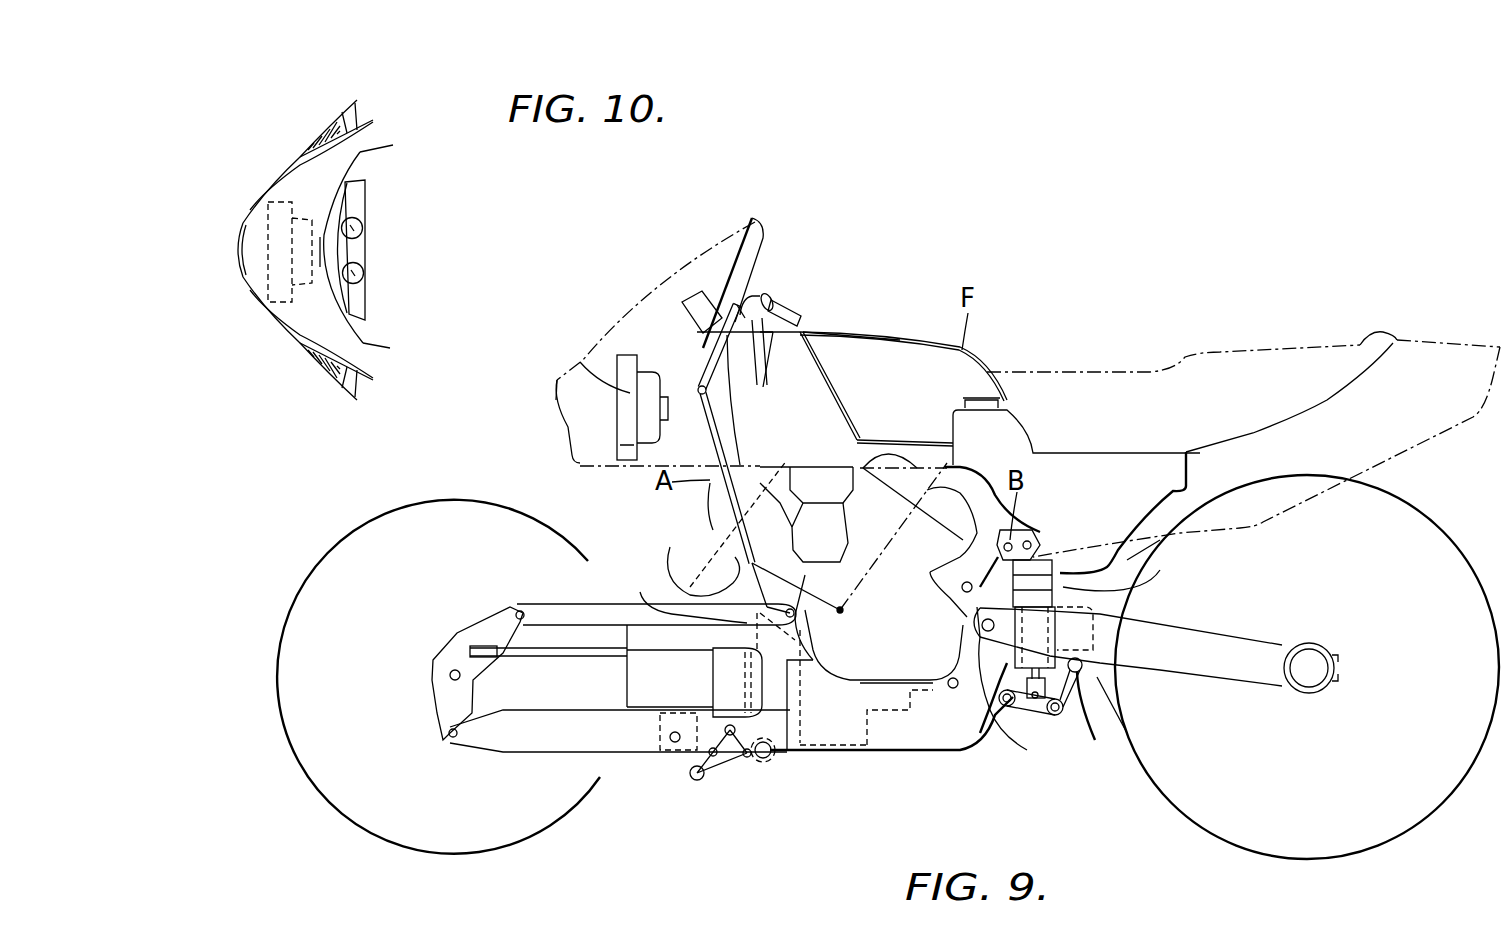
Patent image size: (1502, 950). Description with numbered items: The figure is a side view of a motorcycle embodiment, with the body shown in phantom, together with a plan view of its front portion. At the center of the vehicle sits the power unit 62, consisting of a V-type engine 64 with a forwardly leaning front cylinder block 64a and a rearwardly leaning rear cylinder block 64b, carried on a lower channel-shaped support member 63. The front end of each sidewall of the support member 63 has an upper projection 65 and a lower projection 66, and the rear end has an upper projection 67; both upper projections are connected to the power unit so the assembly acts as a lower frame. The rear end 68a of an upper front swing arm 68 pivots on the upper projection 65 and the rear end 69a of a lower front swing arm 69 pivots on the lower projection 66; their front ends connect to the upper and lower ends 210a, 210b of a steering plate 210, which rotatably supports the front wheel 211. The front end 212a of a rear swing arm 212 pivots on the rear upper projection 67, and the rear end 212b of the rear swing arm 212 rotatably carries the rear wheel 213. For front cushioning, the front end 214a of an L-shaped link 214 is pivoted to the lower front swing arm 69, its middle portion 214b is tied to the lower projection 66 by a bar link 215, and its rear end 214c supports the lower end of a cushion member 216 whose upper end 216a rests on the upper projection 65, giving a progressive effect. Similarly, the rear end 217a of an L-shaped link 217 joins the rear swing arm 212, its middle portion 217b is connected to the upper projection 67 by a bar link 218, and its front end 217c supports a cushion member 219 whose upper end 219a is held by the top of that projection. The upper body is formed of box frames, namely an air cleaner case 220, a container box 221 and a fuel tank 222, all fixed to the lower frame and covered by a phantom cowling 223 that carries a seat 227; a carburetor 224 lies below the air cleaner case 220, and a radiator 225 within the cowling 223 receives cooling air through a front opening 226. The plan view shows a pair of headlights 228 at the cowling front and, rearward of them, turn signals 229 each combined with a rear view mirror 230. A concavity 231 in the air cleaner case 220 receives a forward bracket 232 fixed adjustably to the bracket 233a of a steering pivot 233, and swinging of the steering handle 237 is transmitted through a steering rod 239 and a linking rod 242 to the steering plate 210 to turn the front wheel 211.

In FIG. 9, the power unit 62 is at (903, 657).
In FIG. 9, the support member 63 is at (950, 727).
In FIG. 9, the V-type engine 64 is at (877, 640).
In FIG. 9, the front cylinder block 64a is at (677, 552).
In FIG. 9, the rear cylinder block 64b is at (817, 483).
In FIG. 9, the upper projection 65 is at (838, 607).
In FIG. 9, the lower projection 66 is at (747, 760).
In FIG. 9, the upper projection 67 is at (983, 643).
In FIG. 9, the upper front swing arm 68 is at (543, 613).
In FIG. 9, the rear end of upper front swing arm 68a is at (790, 607).
In FIG. 9, the lower front swing arm 69 is at (537, 743).
In FIG. 9, the rear end of lower front swing arm 69a is at (790, 770).
In FIG. 9, the steering plate 210 is at (443, 693).
In FIG. 9, the upper end of steering plate 210a is at (517, 610).
In FIG. 9, the lower end of steering plate 210b is at (450, 740).
In FIG. 9, the front wheel 211 is at (403, 847).
In FIG. 9, the rear swing arm 212 is at (1218, 673).
In FIG. 9, the front end of rear swing arm 212a is at (980, 727).
In FIG. 9, the rear axle 212b is at (1323, 670).
In FIG. 9, the rear wheel 213 is at (1400, 836).
In FIG. 9, the L-shaped link 214 is at (680, 757).
In FIG. 9, the front end of L-shaped link 214a is at (667, 737).
In FIG. 9, the middle portion of L-shaped link 214b is at (697, 777).
In FIG. 9, the rear end of L-shaped link 214c is at (730, 765).
In FIG. 9, the bar link 215 is at (723, 780).
In FIG. 9, the cushion member 216 is at (713, 683).
In FIG. 9, the upper end of cushion member 216a is at (643, 589).
In FIG. 9, the L-shaped link 217 is at (1067, 700).
In FIG. 9, the rear end of L-shaped link 217a is at (1131, 661).
In FIG. 9, the middle portion of L-shaped link 217b is at (1065, 710).
In FIG. 9, the front end of L-shaped link 217c is at (1063, 743).
In FIG. 9, the bar link 218 is at (1027, 703).
In FIG. 9, the cushion member 219 is at (1114, 600).
In FIG. 9, the upper end of cushion member 219a is at (1037, 547).
In FIG. 9, the air cleaner case 220 is at (793, 367).
In FIG. 9, the container box 221 is at (887, 333).
In FIG. 9, the fuel tank 222 is at (1003, 427).
In FIG. 10, the cowling 223 is at (320, 337).
In FIG. 9, the cowling 223 is at (1220, 450).
In FIG. 9, the carburetor 224 is at (903, 389).
In FIG. 10, the radiator 225 is at (236, 242).
In FIG. 9, the radiator 225 is at (580, 362).
In FIG. 10, the opening 226 is at (235, 250).
In FIG. 9, the opening 226 is at (560, 433).
In FIG. 9, the seat 227 is at (1136, 368).
In FIG. 10, the headlights 228 is at (277, 177).
In FIG. 10, the turn signals 229 is at (323, 128).
In FIG. 10, the rear view mirror 230 is at (367, 110).
In FIG. 9, the concavity 231 is at (650, 408).
In FIG. 9, the bracket 232 is at (775, 297).
In FIG. 9, the steering pivot 233 is at (707, 363).
In FIG. 9, the bracket of steering pivot 233a is at (738, 312).
In FIG. 9, the steering handle 237 is at (715, 300).
In FIG. 9, the steering rod 239 is at (713, 504).
In FIG. 9, the linking rod 242 is at (553, 655).